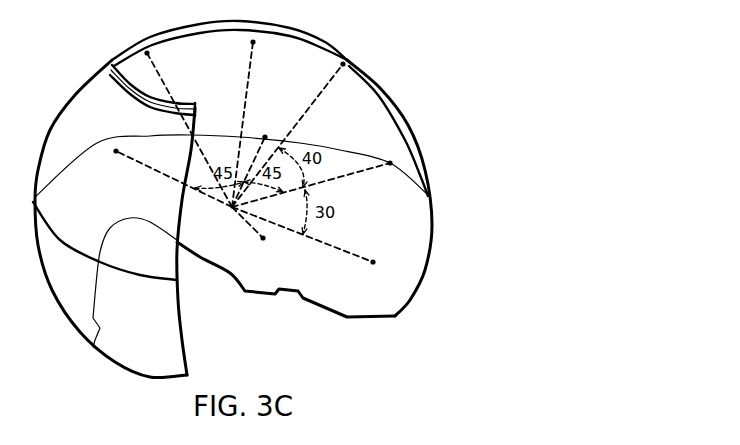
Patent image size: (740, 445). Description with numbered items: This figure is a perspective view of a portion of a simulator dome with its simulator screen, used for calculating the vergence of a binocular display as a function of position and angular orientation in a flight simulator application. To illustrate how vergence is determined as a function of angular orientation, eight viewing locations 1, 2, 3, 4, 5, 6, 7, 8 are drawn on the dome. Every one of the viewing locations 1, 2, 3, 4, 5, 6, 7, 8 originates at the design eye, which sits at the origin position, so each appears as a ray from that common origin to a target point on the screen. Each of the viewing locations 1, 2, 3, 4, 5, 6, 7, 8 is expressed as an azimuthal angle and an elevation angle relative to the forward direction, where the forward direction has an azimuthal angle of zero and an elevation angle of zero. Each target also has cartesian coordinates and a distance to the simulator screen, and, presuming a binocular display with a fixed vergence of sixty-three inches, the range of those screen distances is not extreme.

The viewing location 1 is at (163, 171).
The viewing location 2 is at (254, 161).
The viewing location 3 is at (316, 176).
The viewing location 4 is at (188, 127).
The viewing location 5 is at (254, 123).
The viewing location 6 is at (289, 132).
The viewing location 7 is at (249, 231).
The viewing location 8 is at (313, 244).